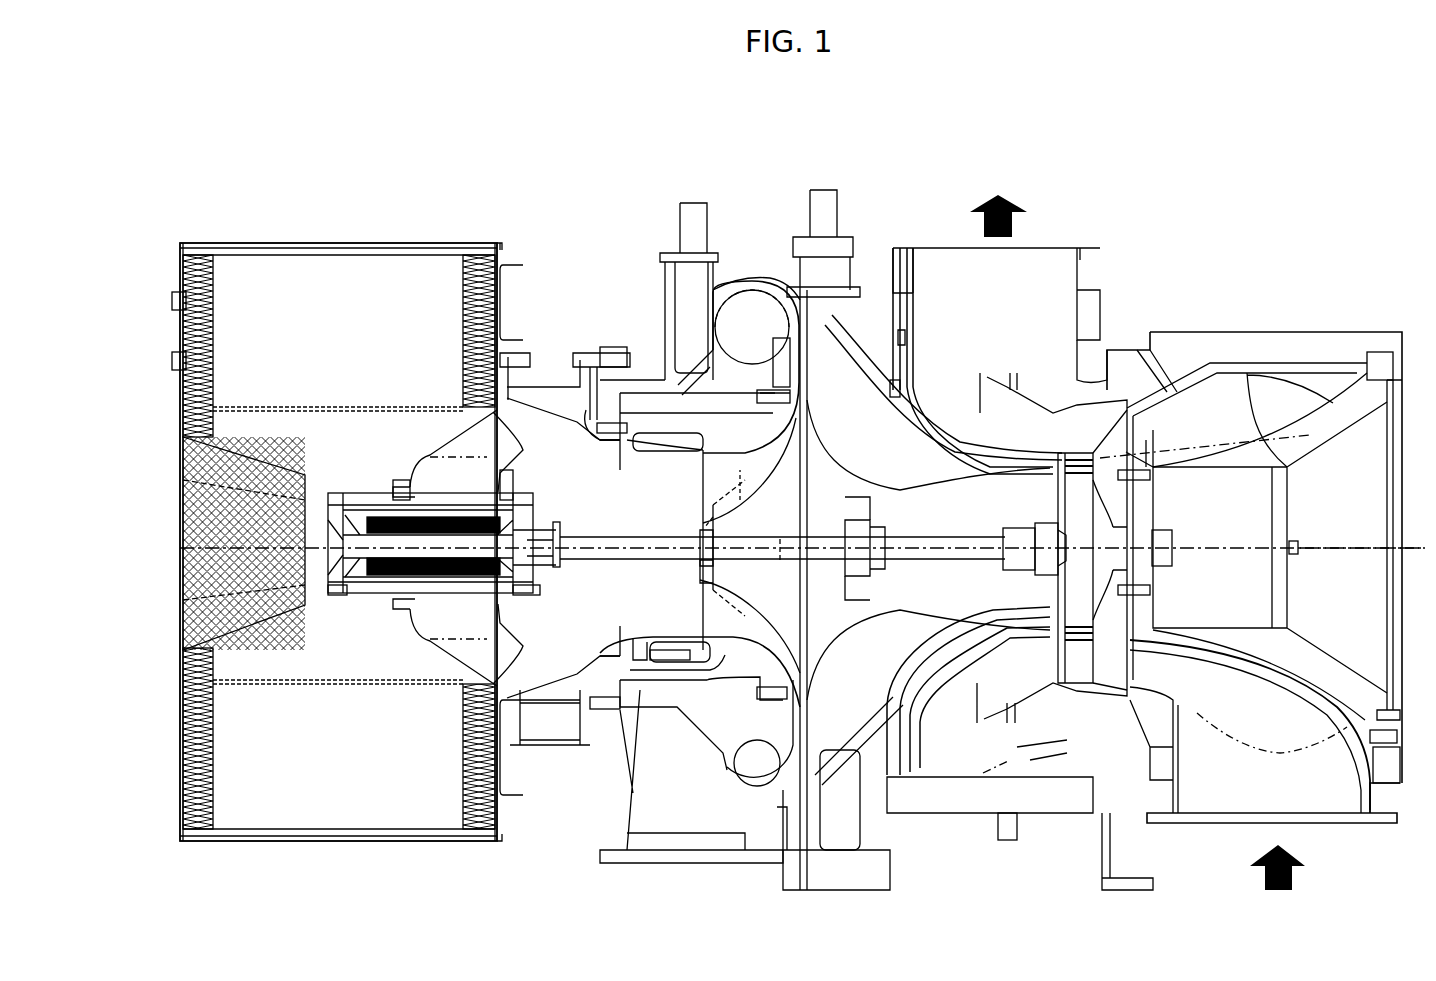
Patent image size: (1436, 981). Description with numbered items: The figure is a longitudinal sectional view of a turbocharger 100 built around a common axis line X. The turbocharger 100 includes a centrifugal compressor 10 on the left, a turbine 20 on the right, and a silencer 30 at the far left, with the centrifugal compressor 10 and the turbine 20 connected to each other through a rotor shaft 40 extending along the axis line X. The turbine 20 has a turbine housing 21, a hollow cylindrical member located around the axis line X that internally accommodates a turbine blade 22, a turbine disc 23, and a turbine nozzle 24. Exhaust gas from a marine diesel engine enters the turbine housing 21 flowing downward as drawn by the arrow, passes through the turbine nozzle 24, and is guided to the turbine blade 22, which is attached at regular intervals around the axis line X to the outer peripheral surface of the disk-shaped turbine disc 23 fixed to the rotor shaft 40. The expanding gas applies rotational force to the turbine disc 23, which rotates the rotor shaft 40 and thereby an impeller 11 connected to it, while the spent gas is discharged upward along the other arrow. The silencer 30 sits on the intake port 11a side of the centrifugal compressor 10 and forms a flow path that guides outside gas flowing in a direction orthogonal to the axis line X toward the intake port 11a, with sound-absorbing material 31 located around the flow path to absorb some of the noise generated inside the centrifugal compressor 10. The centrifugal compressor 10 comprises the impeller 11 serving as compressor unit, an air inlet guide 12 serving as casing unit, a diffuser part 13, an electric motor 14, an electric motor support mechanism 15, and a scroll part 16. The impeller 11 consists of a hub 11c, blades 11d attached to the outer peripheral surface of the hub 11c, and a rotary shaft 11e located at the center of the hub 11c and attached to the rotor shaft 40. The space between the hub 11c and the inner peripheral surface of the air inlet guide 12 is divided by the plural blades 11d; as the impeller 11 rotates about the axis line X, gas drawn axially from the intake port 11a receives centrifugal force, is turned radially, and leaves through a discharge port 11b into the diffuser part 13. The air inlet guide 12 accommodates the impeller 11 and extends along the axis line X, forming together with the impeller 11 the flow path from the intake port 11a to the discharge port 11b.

The turbocharger 100 is at (130, 208).
The centrifugal compressor 10 is at (598, 190).
The impeller 11 is at (680, 576).
The intake port 11a is at (680, 483).
The discharge port 11b is at (765, 397).
The hub 11c is at (735, 497).
The blade 11d is at (705, 610).
The rotary shaft 11e is at (797, 560).
The air inlet guide 12 is at (590, 742).
The diffuser part 13 is at (780, 358).
The electric motor 14 is at (357, 612).
The electric motor support mechanism 15 is at (548, 772).
The scroll part 16 is at (757, 270).
The turbine 20 is at (1238, 254).
The turbine housing 21 is at (1085, 268).
The turbine blade 22 is at (1060, 437).
The turbine disc 23 is at (1132, 595).
The turbine nozzle 24 is at (1110, 435).
The silencer 30 is at (466, 870).
The sound-absorbing material 31 is at (213, 300).
The rotor shaft 40 is at (918, 575).
The axis line X is at (1361, 545).